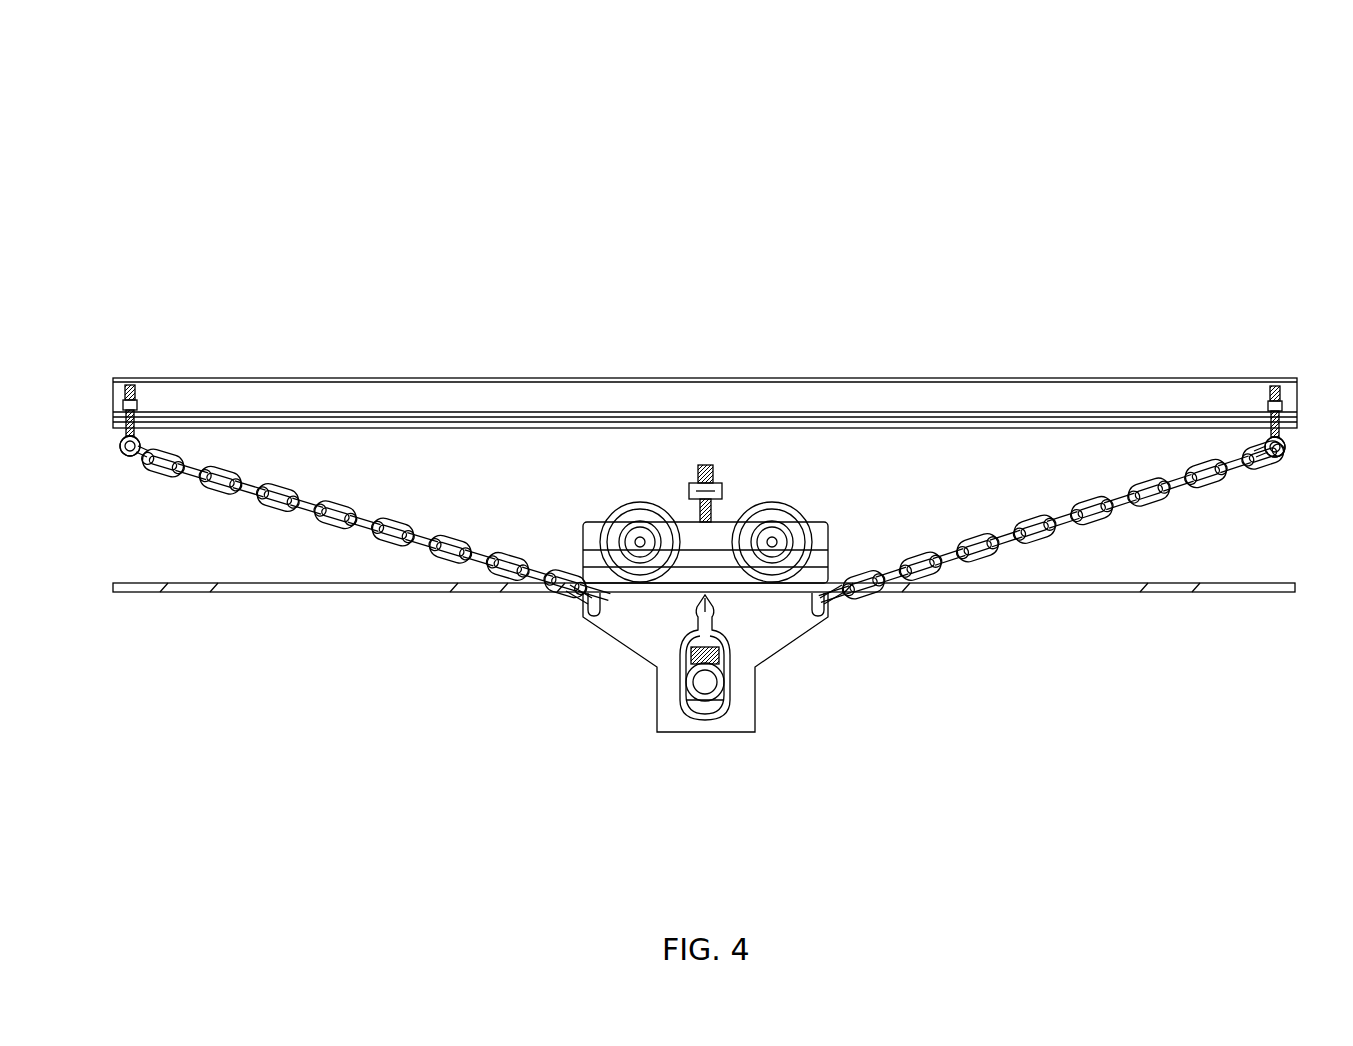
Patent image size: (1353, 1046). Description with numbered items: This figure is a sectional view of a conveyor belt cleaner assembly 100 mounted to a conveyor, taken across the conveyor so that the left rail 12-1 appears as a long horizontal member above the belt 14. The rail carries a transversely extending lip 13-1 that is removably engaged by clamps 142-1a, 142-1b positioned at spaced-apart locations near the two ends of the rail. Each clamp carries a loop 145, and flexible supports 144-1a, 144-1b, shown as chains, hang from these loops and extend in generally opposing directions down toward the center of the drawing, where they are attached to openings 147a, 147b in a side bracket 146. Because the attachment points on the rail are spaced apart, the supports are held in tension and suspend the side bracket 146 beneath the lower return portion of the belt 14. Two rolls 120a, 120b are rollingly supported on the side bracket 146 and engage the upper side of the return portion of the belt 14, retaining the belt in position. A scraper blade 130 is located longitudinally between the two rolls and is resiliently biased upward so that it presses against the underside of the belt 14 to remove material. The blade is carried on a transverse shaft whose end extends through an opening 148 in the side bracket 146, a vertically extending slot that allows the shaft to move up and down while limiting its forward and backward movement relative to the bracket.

The conveyor belt cleaner assembly 100 is at (108, 150).
The left rail 12-1 is at (657, 378).
The lip of the rail 13-1 is at (935, 412).
The belt 14 is at (1160, 592).
The roll 120a is at (643, 502).
The roll 120b is at (772, 502).
The scraper blade 130 is at (693, 611).
The clamp 142-1a is at (150, 412).
The clamp 142-1b is at (1262, 412).
The flexible support 144-1a is at (362, 502).
The flexible support 144-1b is at (1008, 506).
The loop 145 is at (120, 444).
The side bracket 146 is at (828, 547).
The opening in the bracket 147a is at (597, 630).
The opening in the bracket 147b is at (800, 620).
The opening 148 is at (723, 710).